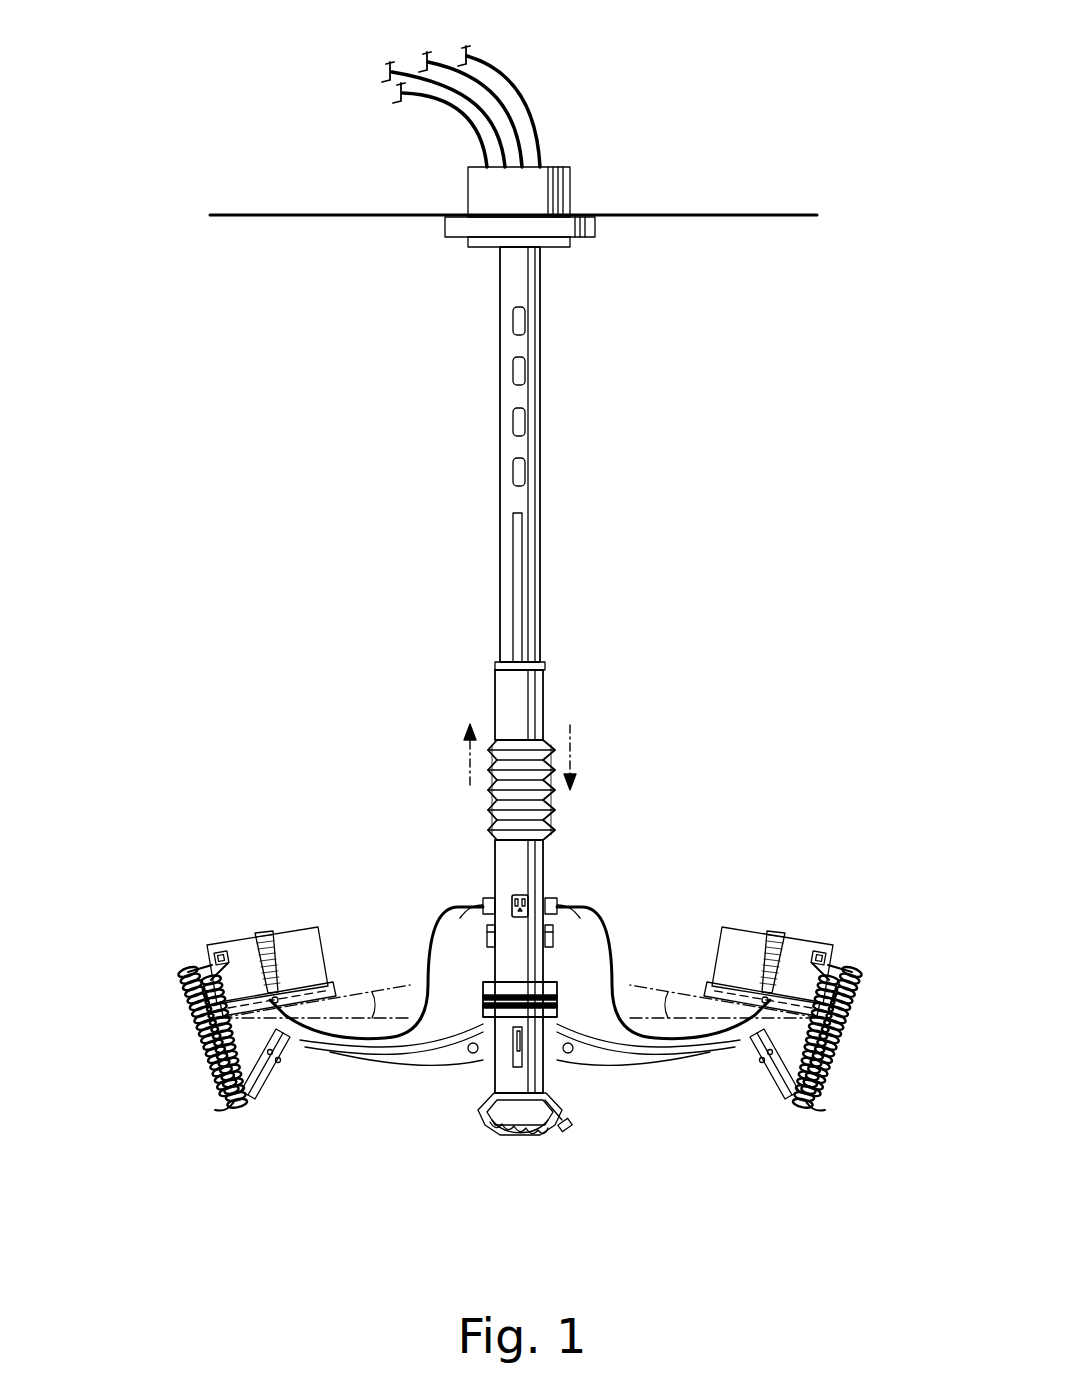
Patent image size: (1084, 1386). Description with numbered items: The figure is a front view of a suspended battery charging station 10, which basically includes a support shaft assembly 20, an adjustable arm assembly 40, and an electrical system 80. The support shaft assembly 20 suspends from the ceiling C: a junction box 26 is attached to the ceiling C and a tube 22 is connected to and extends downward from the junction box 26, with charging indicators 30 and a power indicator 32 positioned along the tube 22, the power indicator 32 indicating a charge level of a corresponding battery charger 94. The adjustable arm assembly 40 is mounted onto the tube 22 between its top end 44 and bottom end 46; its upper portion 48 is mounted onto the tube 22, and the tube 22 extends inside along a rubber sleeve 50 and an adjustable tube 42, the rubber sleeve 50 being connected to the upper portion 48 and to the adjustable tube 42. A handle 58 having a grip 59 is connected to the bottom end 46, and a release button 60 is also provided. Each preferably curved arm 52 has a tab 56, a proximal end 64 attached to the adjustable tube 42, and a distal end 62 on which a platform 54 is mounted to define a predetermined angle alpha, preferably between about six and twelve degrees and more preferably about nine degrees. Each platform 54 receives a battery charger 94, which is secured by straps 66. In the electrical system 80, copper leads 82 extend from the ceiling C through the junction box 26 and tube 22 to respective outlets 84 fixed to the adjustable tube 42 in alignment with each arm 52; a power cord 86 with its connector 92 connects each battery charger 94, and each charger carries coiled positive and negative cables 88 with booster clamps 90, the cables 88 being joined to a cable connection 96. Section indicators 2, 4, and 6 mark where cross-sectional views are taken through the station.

The suspended battery charging station 10 is at (826, 114).
The support shaft assembly 20 is at (552, 454).
The tube 22 is at (540, 275).
The junction box 26 is at (570, 190).
The charging indicators 30 is at (512, 321).
The power indicator 32 is at (525, 513).
The adjustable arm assembly 40 is at (514, 788).
The adjustable tube 42 is at (556, 815).
The top end 44 is at (545, 662).
The bottom end 46 is at (525, 1096).
The upper portion 48 is at (495, 685).
The rubber sleeve 50 is at (543, 740).
The arm 52 is at (350, 1043).
The platform 54 is at (337, 992).
The tab 56 is at (282, 1035).
The handle 58 is at (483, 1108).
The grip 59 is at (528, 1133).
The release button 60 is at (570, 1128).
The distal end 62 is at (268, 1012).
The proximal end 64 is at (445, 1050).
The straps 66 is at (257, 957).
The electrical system 80 is at (562, 122).
The lead 82 is at (493, 70).
The outlet 84 is at (510, 896).
The power cord 86 is at (426, 965).
The positive and negative cables 88 is at (198, 1040).
The booster clamps 90 is at (255, 1080).
The connector 92 is at (455, 915).
The battery charger 94 is at (290, 930).
The cable connection 96 is at (207, 946).
The ceiling C is at (278, 215).
The section line 2 is at (521, 55).
The section line 4 is at (418, 853).
The section line 6 is at (497, 630).